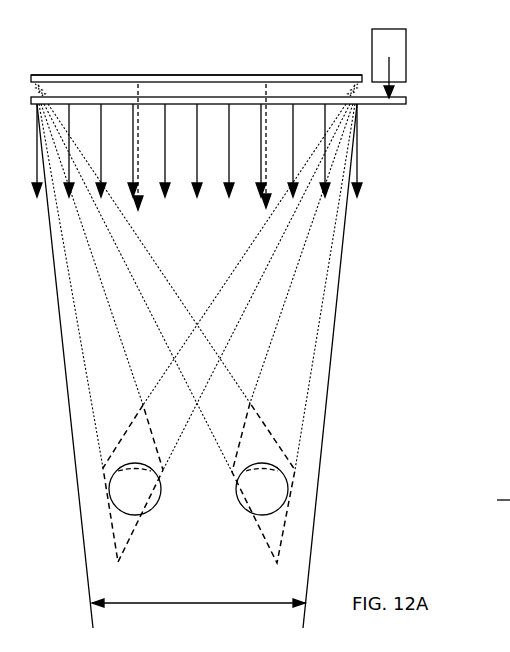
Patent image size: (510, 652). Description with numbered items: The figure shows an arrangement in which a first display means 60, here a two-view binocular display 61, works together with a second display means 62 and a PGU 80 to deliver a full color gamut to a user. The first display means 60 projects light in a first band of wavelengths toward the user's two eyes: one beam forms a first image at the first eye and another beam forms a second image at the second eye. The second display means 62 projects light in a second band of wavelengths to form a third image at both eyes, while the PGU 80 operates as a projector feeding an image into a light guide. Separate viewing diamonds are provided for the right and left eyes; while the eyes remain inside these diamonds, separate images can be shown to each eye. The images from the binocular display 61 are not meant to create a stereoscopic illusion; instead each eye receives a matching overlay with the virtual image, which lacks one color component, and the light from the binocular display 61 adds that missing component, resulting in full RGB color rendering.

The first display means 60 is at (213, 80).
The two-view binocular display 61 is at (92, 80).
The second display means 62 is at (406, 97).
The PGU 80 is at (408, 63).